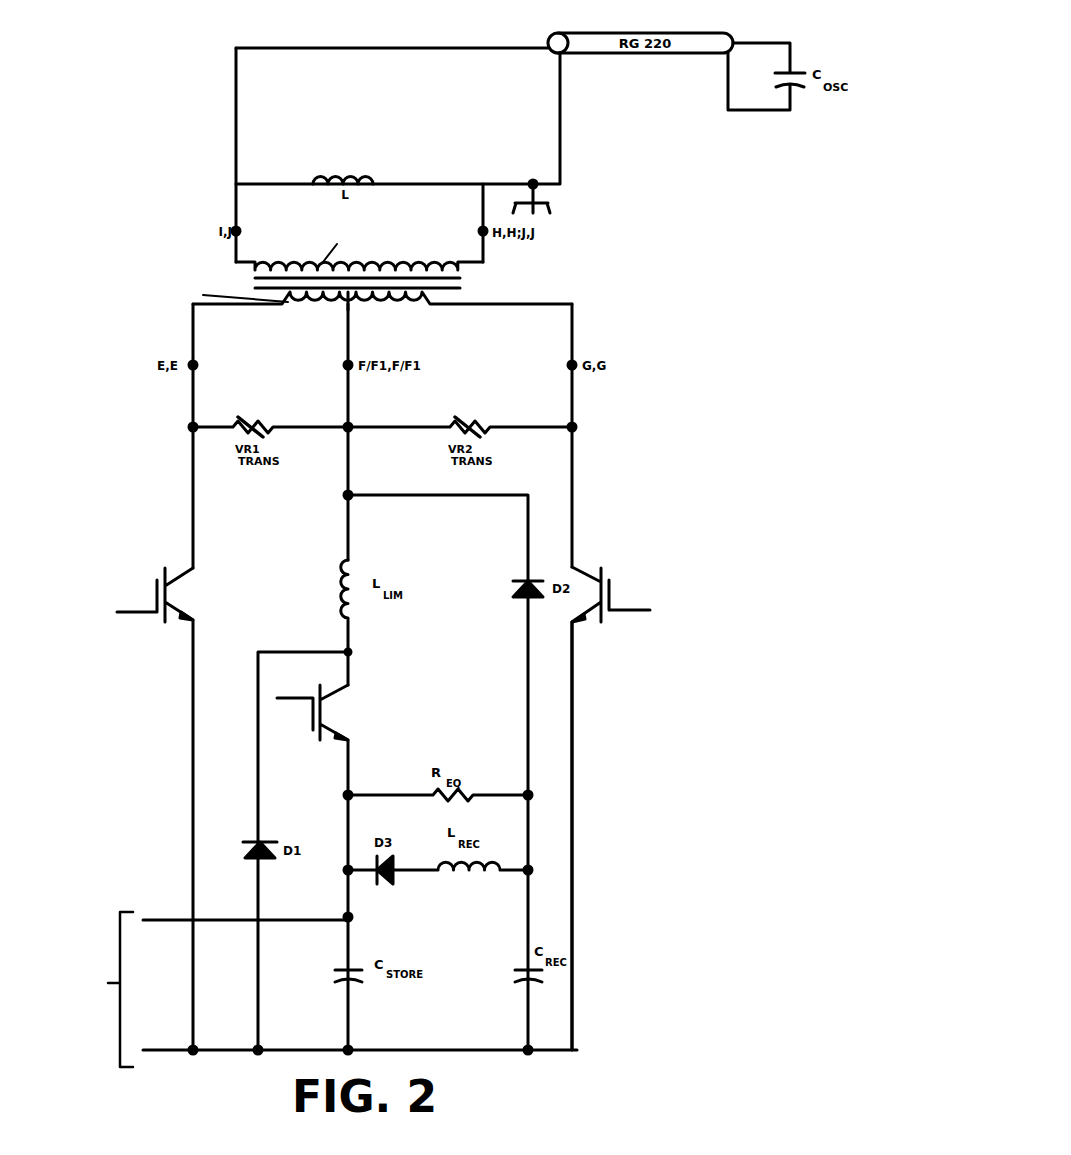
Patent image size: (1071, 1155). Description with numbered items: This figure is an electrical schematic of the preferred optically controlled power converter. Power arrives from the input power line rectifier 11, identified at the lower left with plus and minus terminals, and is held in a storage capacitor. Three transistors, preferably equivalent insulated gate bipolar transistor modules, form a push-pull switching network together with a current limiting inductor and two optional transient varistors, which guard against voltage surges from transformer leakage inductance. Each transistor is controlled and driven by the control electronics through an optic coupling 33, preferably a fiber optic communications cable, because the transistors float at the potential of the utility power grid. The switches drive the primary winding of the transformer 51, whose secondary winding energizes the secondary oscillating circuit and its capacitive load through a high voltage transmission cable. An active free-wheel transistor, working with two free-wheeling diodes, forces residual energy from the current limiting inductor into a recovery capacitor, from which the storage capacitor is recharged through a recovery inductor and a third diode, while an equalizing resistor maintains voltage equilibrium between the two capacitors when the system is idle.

The optic coupling 33 is at (108, 608).
The transformer 51 is at (470, 283).
The input power line rectifier 11 is at (81, 989).